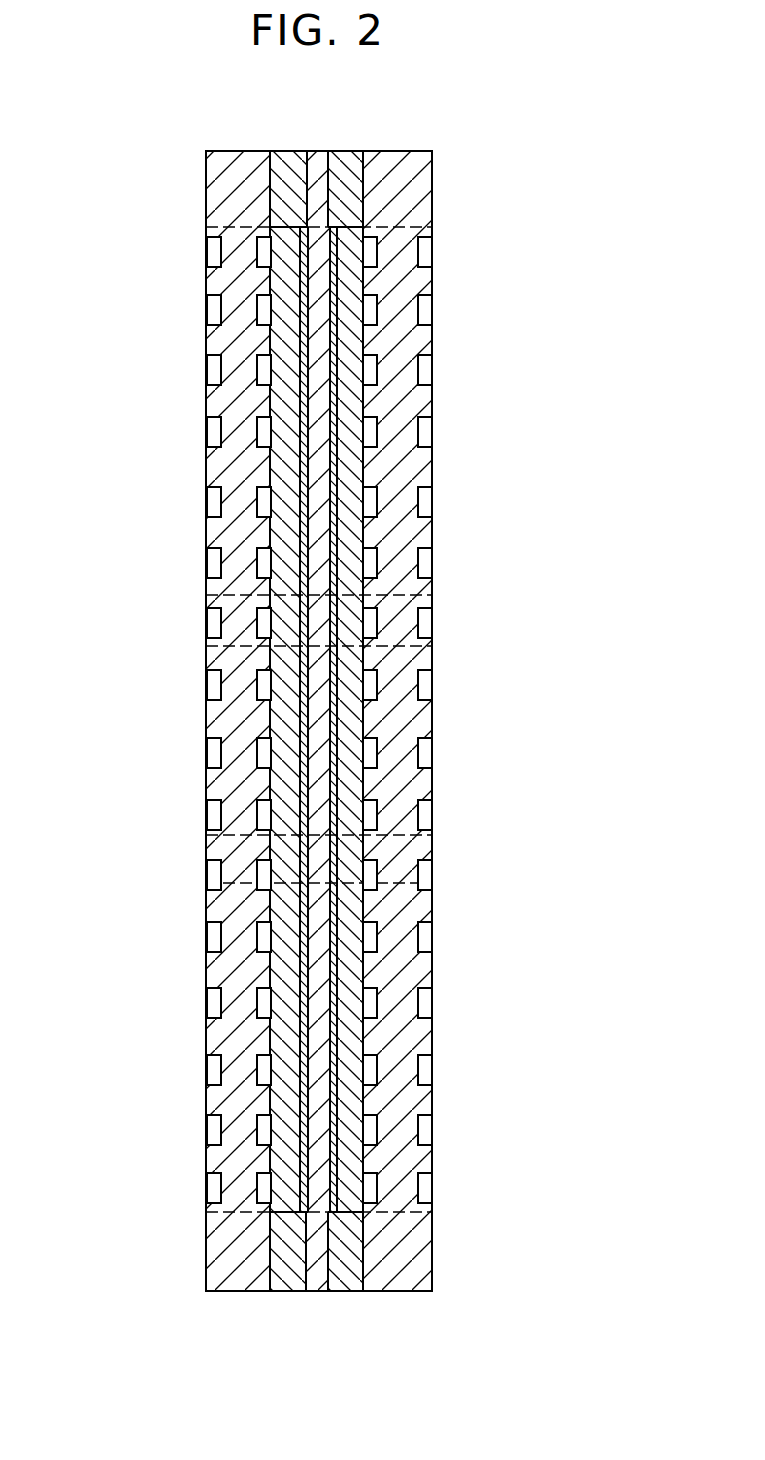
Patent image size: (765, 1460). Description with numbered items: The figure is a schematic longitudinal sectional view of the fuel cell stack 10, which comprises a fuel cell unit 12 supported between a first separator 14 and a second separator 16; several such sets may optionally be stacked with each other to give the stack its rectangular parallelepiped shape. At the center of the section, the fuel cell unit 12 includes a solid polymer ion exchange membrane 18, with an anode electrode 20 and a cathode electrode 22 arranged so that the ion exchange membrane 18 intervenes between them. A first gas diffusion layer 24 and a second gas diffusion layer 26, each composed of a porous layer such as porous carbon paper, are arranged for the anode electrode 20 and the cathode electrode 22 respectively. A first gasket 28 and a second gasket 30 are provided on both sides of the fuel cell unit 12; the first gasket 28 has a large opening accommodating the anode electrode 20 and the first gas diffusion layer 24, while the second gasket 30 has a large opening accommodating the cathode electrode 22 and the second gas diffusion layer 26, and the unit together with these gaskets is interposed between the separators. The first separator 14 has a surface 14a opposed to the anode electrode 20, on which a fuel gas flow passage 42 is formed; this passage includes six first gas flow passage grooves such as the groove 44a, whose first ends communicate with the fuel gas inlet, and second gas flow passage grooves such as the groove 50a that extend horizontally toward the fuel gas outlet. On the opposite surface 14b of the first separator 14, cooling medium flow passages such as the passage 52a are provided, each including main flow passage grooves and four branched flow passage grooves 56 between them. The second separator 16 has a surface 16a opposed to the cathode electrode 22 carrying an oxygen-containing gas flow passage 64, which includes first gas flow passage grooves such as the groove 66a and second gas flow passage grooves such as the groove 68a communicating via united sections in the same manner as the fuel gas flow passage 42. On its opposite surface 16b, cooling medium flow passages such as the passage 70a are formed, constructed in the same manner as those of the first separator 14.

The fuel cell stack 10 is at (508, 78).
The fuel cell unit 12 is at (319, 148).
The first separator 14 is at (435, 197).
The surface of first separator 14a is at (360, 150).
The surface of first separator 14b is at (432, 212).
The second separator 16 is at (206, 150).
The surface of second separator 16a is at (283, 150).
The surface of second separator 16b is at (206, 200).
The solid polymer ion exchange membrane 18 is at (315, 1278).
The anode electrode 20 is at (322, 790).
The cathode electrode 22 is at (303, 1166).
The first gas diffusion layer 24 is at (340, 905).
The second gas diffusion layer 26 is at (283, 1100).
The first gasket 28 is at (350, 1297).
The second gasket 30 is at (286, 1296).
The fuel gas flow passage 42 is at (380, 499).
The first gas flow passage groove 44a is at (368, 566).
The second gas flow passage groove 50a is at (370, 1072).
The cooling medium flow passage 52a is at (437, 373).
The branched flow passage groove 56 is at (426, 313).
The oxygen-containing gas flow passage 64 is at (254, 434).
The first gas flow passage groove 66a is at (263, 510).
The second gas flow passage groove 68a is at (262, 1072).
The cooling medium flow passage 70a is at (204, 370).